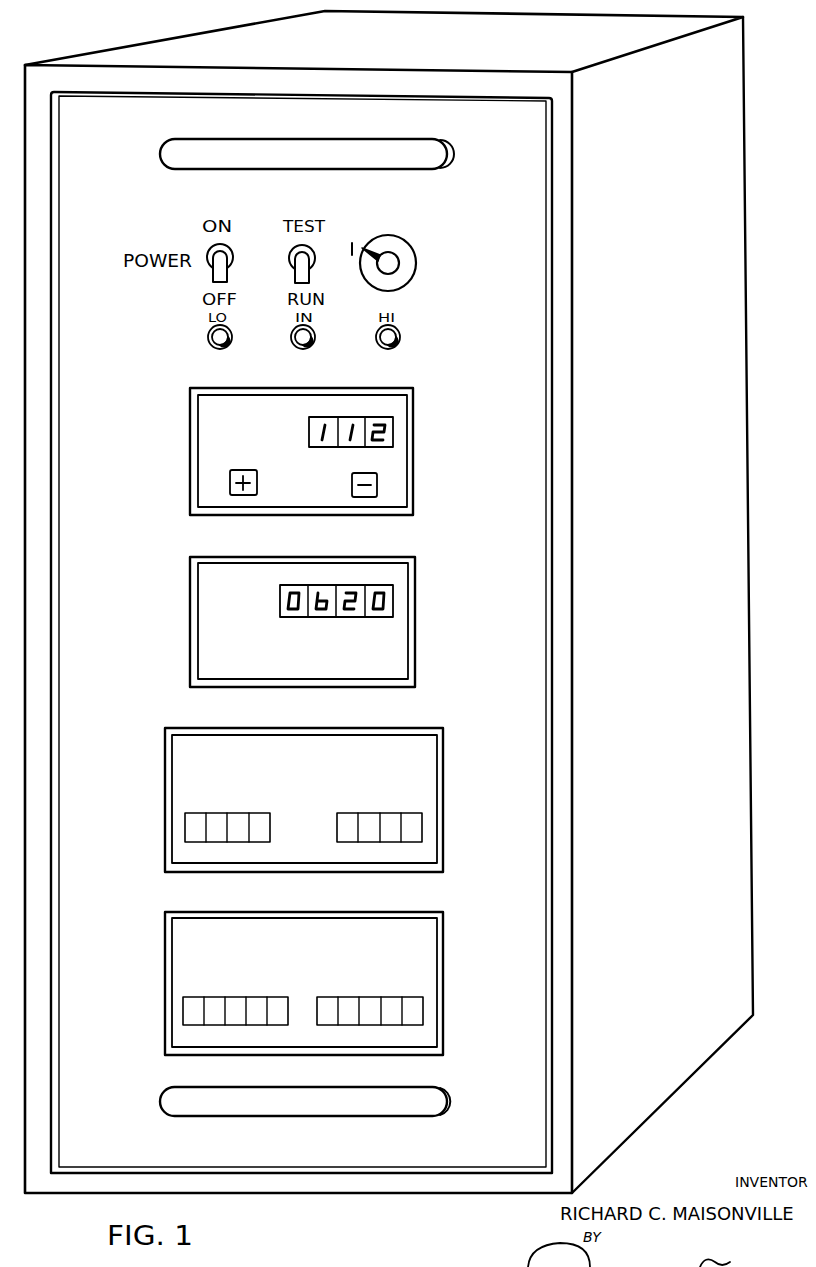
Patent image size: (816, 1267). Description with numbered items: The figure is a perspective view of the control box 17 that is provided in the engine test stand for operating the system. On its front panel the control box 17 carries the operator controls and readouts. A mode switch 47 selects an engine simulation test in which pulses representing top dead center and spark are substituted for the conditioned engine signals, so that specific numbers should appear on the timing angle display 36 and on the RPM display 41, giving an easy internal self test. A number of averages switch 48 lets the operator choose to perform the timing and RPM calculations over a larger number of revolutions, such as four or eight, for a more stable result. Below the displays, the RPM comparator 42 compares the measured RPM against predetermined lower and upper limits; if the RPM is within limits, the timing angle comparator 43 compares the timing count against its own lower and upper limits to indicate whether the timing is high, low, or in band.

The control box 17 is at (745, 371).
The mode switch 47 is at (292, 265).
The number of averages switch 48 is at (411, 268).
The timing angle display 36 is at (410, 459).
The RPM display 41 is at (407, 630).
The timing angle comparator 43 is at (438, 785).
The RPM comparator 42 is at (432, 970).